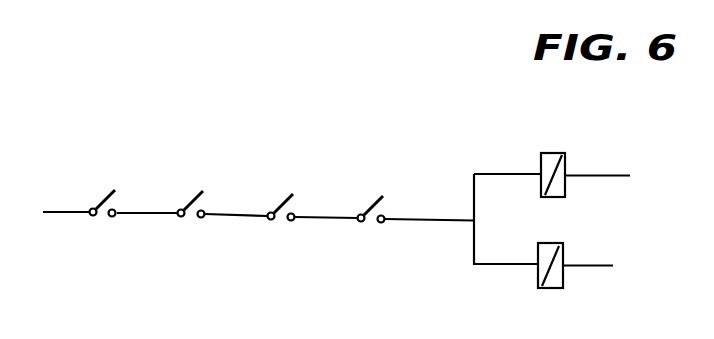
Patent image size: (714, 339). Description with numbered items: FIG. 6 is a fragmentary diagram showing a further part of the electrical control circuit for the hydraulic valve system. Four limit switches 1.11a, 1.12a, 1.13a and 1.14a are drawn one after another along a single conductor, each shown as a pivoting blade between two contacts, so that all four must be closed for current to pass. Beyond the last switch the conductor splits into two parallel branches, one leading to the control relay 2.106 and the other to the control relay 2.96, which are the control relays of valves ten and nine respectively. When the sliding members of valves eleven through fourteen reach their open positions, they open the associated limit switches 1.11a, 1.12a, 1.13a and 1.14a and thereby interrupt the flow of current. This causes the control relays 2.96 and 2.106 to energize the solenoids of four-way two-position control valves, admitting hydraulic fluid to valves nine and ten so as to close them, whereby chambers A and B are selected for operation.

The limit switch 1.11a is at (100, 196).
The limit switch 1.12a is at (184, 199).
The limit switch 1.13a is at (287, 202).
The limit switch 1.14a is at (376, 203).
The control relay 2.106 is at (567, 171).
The control relay 2.96 is at (565, 260).